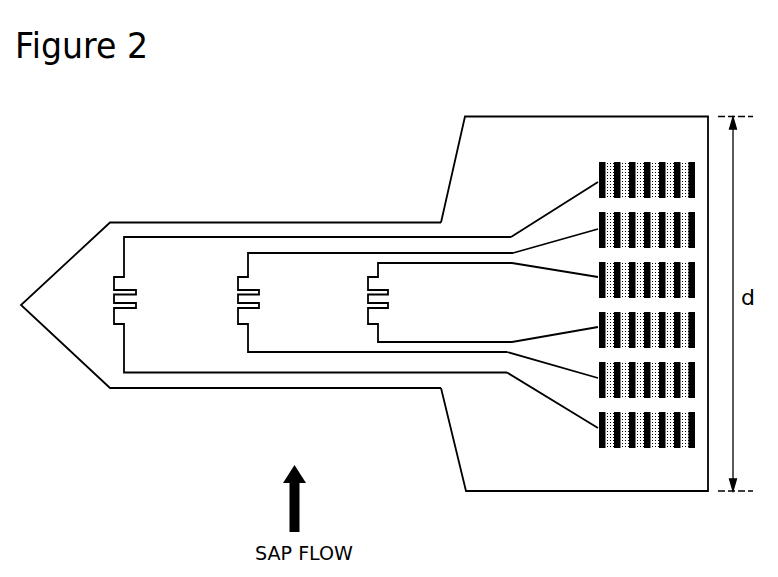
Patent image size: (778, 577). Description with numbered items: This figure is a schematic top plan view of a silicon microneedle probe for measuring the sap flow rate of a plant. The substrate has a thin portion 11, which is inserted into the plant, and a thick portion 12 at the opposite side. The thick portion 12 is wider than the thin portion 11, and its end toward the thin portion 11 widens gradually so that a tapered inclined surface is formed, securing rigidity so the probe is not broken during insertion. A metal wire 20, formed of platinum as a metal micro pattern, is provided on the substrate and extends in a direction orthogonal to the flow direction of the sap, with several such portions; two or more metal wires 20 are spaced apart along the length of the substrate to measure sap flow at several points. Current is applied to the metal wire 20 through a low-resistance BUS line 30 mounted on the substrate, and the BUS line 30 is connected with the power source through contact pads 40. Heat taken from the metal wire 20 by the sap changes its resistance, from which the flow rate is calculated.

The thin portion 11 is at (182, 228).
The thick portion 12 is at (514, 138).
The metal wire 20 is at (113, 298).
The BUS line 30 is at (292, 253).
The contact pads 40 is at (653, 165).